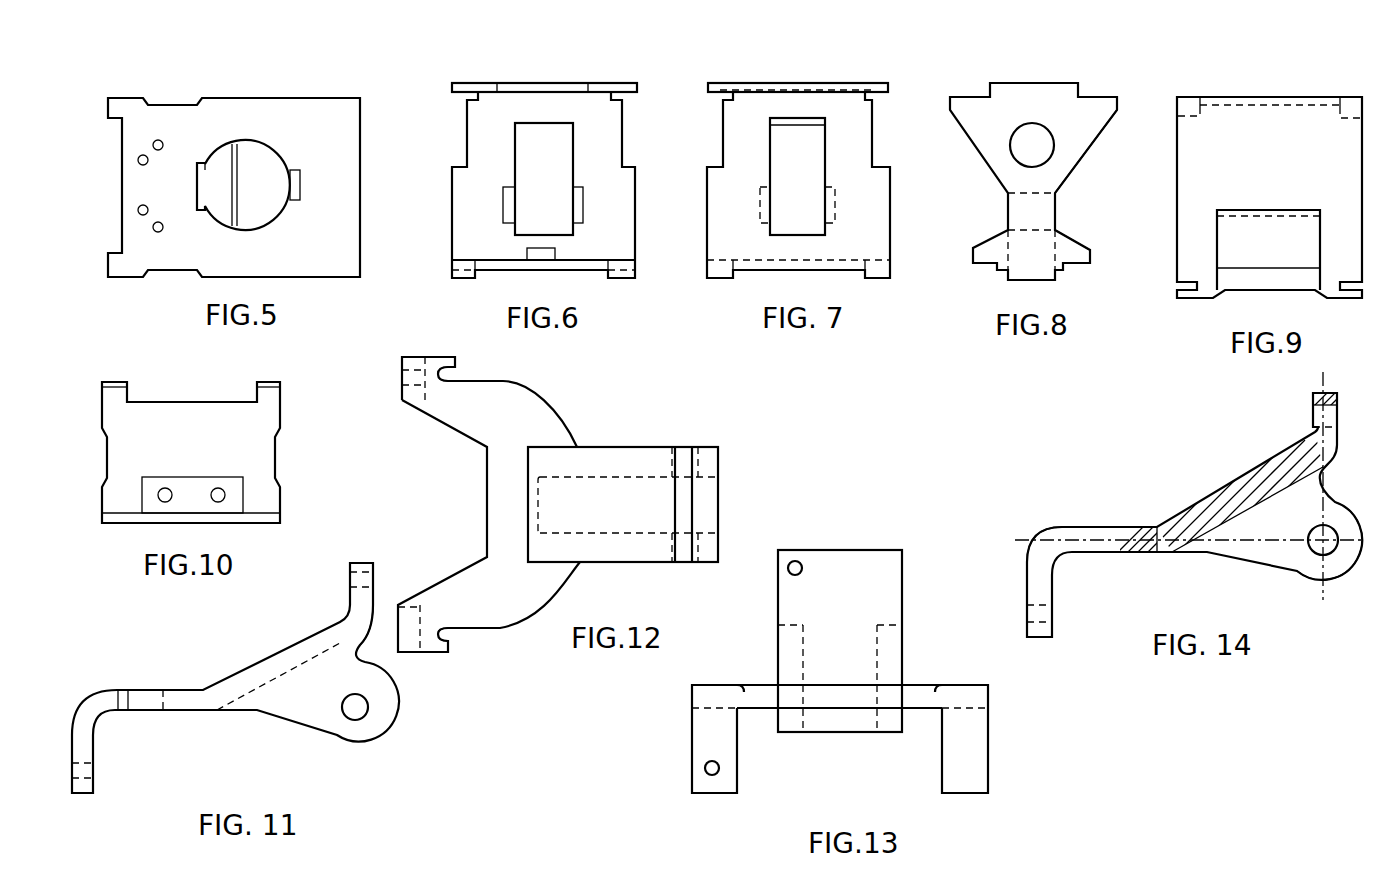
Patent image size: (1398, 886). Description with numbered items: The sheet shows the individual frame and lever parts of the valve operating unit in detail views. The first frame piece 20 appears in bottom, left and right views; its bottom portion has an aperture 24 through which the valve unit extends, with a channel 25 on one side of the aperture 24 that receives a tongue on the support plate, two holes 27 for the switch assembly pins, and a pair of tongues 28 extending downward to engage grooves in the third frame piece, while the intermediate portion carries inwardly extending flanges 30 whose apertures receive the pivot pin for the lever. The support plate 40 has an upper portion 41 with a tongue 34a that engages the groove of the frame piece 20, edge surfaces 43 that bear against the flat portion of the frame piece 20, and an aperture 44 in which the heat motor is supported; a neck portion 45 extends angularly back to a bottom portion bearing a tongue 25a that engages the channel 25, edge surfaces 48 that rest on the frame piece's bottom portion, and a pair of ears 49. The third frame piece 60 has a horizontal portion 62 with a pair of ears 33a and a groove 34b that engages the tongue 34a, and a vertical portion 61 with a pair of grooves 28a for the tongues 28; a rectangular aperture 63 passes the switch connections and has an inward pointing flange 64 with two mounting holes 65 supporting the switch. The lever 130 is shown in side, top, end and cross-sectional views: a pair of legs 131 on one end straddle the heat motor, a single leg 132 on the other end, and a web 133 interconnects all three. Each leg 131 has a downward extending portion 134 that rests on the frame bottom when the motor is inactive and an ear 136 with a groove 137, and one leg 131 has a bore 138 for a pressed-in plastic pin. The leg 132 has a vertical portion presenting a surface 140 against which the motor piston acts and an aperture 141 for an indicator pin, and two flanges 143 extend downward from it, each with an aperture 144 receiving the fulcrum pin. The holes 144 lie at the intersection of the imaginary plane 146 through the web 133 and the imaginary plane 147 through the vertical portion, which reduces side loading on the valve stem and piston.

In FIG. 5, the frame piece 20 is at (332, 82).
In FIG. 6, the frame piece 20 is at (570, 77).
In FIG. 7, the frame piece 20 is at (826, 77).
In FIG. 5, the aperture 24 is at (262, 160).
In FIG. 5, the channel 25 is at (203, 165).
In FIG. 5, the holes 27 is at (138, 162).
In FIG. 6, the tongues 28 is at (470, 280).
In FIG. 7, the tongues 28 is at (720, 280).
In FIG. 6, the flanges 30 is at (573, 197).
In FIG. 8, the tongue 34a is at (1030, 92).
In FIG. 8, the support plate 40 is at (1092, 82).
In FIG. 8, the upper portion 41 is at (1085, 155).
In FIG. 8, the edge surfaces 43 is at (968, 97).
In FIG. 8, the aperture 44 is at (1014, 152).
In FIG. 8, the neck portion 45 is at (1057, 213).
In FIG. 8, the edge surfaces 48 is at (1068, 275).
In FIG. 8, the ears 49 is at (1093, 251).
In FIG. 8, the tongue 25a is at (1040, 284).
In FIG. 9, the third frame piece 60 is at (1278, 82).
In FIG. 10, the third frame piece 60 is at (292, 398).
In FIG. 9, the vertical portion 61 is at (1362, 146).
In FIG. 9, the rectangular aperture 63 is at (1315, 238).
In FIG. 9, the grooves 28a is at (1177, 293).
In FIG. 10, the ears 33a is at (127, 382).
In FIG. 10, the groove 34b is at (190, 402).
In FIG. 10, the horizontal portion 62 is at (268, 421).
In FIG. 10, the flange 64 is at (208, 477).
In FIG. 10, the mounting holes 65 is at (226, 493).
In FIG. 11, the lever 130 is at (370, 741).
In FIG. 11, the legs 131 is at (140, 689).
In FIG. 12, the legs 131 is at (462, 430).
In FIG. 14, the legs 131 is at (1080, 526).
In FIG. 11, the leg 132 is at (375, 566).
In FIG. 12, the leg 132 is at (685, 447).
In FIG. 13, the leg 132 is at (902, 588).
In FIG. 14, the leg 132 is at (1340, 400).
In FIG. 11, the web 133 is at (262, 661).
In FIG. 12, the web 133 is at (510, 455).
In FIG. 14, the web 133 is at (1236, 496).
In FIG. 11, the downward extending portion 134 is at (95, 746).
In FIG. 13, the downward extending portion 134 is at (737, 760).
In FIG. 14, the downward extending portion 134 is at (1056, 591).
In FIG. 12, the ear 136 is at (432, 357).
In FIG. 12, the groove 137 is at (450, 374).
In FIG. 12, the bore 138 is at (400, 379).
In FIG. 13, the bore 138 is at (712, 773).
In FIG. 11, the surface 140 is at (350, 605).
In FIG. 13, the surface 140 is at (857, 563).
In FIG. 11, the aperture 141 is at (375, 579).
In FIG. 13, the aperture 141 is at (797, 561).
In FIG. 11, the flanges 143 is at (362, 660).
In FIG. 14, the flanges 143 is at (1340, 578).
In FIG. 11, the apertures 144 is at (352, 713).
In FIG. 14, the apertures 144 is at (1331, 536).
In FIG. 14, the imaginary plane 146 is at (1032, 541).
In FIG. 14, the imaginary plane 147 is at (1323, 384).